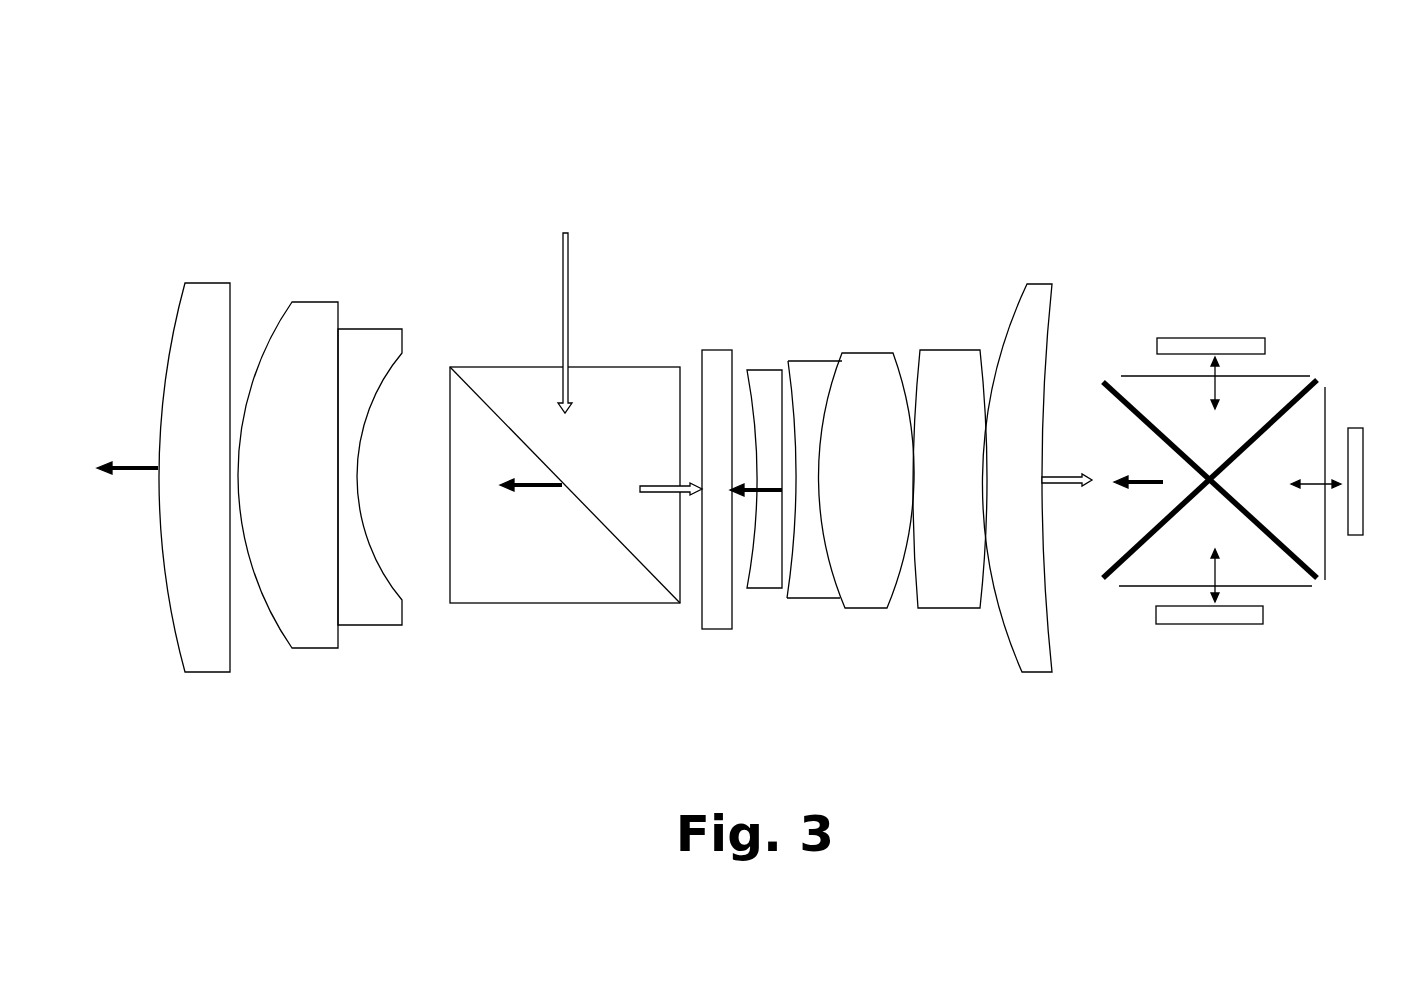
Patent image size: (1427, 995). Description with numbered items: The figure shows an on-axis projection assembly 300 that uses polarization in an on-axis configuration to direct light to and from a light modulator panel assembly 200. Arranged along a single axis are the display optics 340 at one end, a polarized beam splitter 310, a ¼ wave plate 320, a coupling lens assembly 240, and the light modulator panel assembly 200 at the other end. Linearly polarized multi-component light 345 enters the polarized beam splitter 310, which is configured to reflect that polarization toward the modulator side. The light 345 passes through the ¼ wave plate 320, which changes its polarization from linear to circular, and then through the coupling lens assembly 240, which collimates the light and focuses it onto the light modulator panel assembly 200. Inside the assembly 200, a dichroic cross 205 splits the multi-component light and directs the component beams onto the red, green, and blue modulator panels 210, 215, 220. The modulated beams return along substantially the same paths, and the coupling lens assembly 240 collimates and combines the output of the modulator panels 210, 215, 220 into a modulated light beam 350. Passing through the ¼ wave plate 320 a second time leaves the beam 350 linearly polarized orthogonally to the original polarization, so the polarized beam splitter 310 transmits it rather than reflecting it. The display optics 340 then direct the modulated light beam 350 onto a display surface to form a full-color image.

The on-axis projection assembly 300 is at (610, 78).
The display optics 340 is at (268, 255).
The polarized beam splitter 310 is at (563, 605).
The ¼ wave plate 320 is at (706, 350).
The coupling lens assembly 240 is at (851, 272).
The modulated light beam 350 is at (124, 468).
The linearly polarized multi-component light 345 is at (568, 306).
The light modulator panel assembly 200 is at (1192, 258).
The dichroic cross 205 is at (1104, 580).
The modulator panel 210 is at (1203, 625).
The modulator panel 220 is at (1213, 338).
The modulator panel 215 is at (1365, 482).